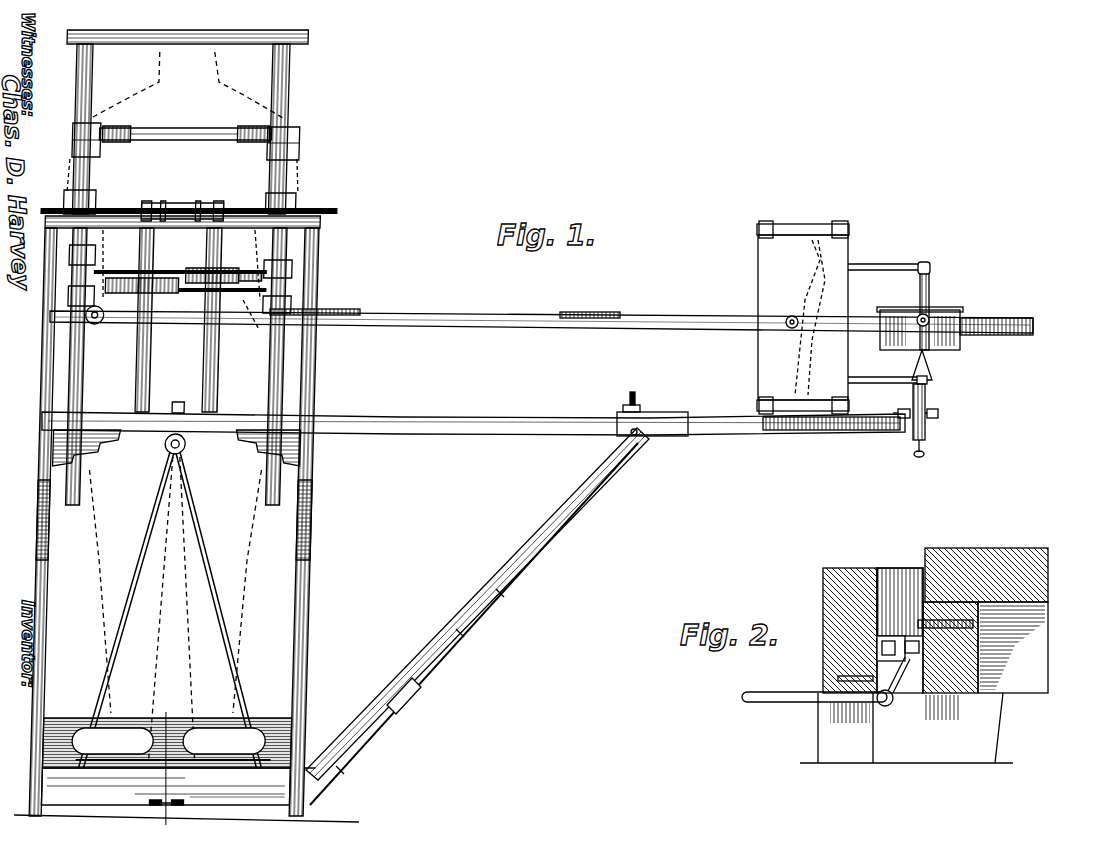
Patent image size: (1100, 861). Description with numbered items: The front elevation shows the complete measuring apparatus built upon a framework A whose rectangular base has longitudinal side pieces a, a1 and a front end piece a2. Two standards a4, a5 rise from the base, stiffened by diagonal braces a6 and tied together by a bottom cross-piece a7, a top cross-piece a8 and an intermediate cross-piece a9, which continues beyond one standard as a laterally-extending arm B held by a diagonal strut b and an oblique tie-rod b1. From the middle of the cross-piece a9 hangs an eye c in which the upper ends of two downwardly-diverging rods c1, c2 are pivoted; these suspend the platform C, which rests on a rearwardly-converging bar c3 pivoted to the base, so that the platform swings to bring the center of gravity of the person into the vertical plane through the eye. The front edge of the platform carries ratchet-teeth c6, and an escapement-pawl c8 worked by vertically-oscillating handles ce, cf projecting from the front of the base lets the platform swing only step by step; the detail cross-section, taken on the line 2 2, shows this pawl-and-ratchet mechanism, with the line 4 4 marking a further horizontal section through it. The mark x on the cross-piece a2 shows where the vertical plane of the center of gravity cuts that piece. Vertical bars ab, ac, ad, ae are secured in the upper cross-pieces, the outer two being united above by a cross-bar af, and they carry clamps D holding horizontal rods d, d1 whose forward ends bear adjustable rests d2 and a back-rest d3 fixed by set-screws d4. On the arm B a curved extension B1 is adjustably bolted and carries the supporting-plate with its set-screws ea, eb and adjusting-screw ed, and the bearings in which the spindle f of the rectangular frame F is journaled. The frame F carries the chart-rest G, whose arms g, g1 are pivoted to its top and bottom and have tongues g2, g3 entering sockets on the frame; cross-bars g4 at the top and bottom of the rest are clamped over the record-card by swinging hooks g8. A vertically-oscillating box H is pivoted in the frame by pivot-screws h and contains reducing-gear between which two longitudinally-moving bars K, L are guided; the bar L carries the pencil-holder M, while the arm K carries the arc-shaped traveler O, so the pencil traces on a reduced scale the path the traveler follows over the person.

In FIG. 1, the cross-bar af is at (304, 38).
In FIG. 1, the horizontal rod d is at (145, 128).
In FIG. 1, the horizontal rod d1 is at (225, 140).
In FIG. 1, the adjustable bearing plate or rest d2 is at (100, 128).
In FIG. 1, the back-rest d3 is at (185, 204).
In FIG. 1, the set-screw d4 is at (243, 311).
In FIG. 1, the clamp D is at (92, 192).
In FIG. 1, the top cross-piece a8 is at (320, 224).
In FIG. 1, the framework A is at (184, 522).
In FIG. 1, the standard a4 is at (47, 350).
In FIG. 1, the standard a5 is at (319, 372).
In FIG. 1, the vertical bar ab is at (87, 366).
In FIG. 1, the vertical bar ac is at (154, 366).
In FIG. 1, the vertical bar ad is at (222, 366).
In FIG. 1, the vertical bar ae is at (273, 392).
In FIG. 1, the diagonal brace a6 is at (57, 600).
In FIG. 1, the arc-shaped traveler O is at (97, 325).
In FIG. 1, the longitudinally-moving bar K is at (672, 333).
In FIG. 1, the laterally-extending arm B is at (437, 436).
In FIG. 1, the curved extension B1 is at (780, 433).
In FIG. 1, the eye c is at (171, 444).
In FIG. 1, the intermediate cross-piece a9 is at (220, 431).
In FIG. 1, the downwardly-diverging rod c1 is at (128, 640).
In FIG. 1, the downwardly-diverging rod c2 is at (218, 610).
In FIG. 1, the bottom cross-piece a7 is at (281, 725).
In FIG. 1, the platform C is at (123, 758).
In FIG. 2, the platform C is at (1048, 578).
In FIG. 1, the section line 2 is at (165, 764).
In FIG. 1, the longitudinal side piece a is at (57, 810).
In FIG. 2, the longitudinal side piece a is at (906, 728).
In FIG. 1, the longitudinal side piece a1 is at (325, 812).
In FIG. 1, the vertically-oscillating handle ce is at (167, 800).
In FIG. 2, the vertically-oscillating handle ce is at (800, 702).
In FIG. 1, the mark x is at (167, 790).
In FIG. 1, the vertically-oscillating handle cf is at (200, 795).
In FIG. 1, the end piece a2 is at (238, 787).
In FIG. 2, the end piece a2 is at (843, 568).
In FIG. 1, the diagonal strut b is at (437, 632).
In FIG. 1, the oblique tie-rod b1 is at (433, 673).
In FIG. 1, the back plate or chart-rest G is at (803, 317).
In FIG. 1, the swinging hook g8 is at (775, 224).
In FIG. 1, the cross-bar g4 is at (815, 440).
In FIG. 1, the pencil-holder M is at (786, 319).
In FIG. 1, the horizontally-projecting arm g is at (890, 263).
In FIG. 1, the horizontally-projecting arm g1 is at (883, 369).
In FIG. 1, the rectangular frame F is at (929, 282).
In FIG. 1, the tongue g2 is at (930, 268).
In FIG. 1, the vertically-oscillating box H is at (958, 348).
In FIG. 1, the pivot-screw h is at (929, 315).
In FIG. 1, the longitudinally-moving bar L is at (997, 322).
In FIG. 1, the tongue g3 is at (932, 380).
In FIG. 1, the pin or spindle f is at (925, 400).
In FIG. 1, the set-screw ea is at (898, 413).
In FIG. 1, the set-screw eb is at (938, 413).
In FIG. 1, the adjusting-screw ed is at (923, 457).
In FIG. 2, the escapement-pawl c8 is at (905, 568).
In FIG. 2, the rearwardly-converging bar c3 is at (1013, 647).
In FIG. 2, the section line 4 is at (830, 622).
In FIG. 2, the ratchet-teeth c6 is at (899, 685).